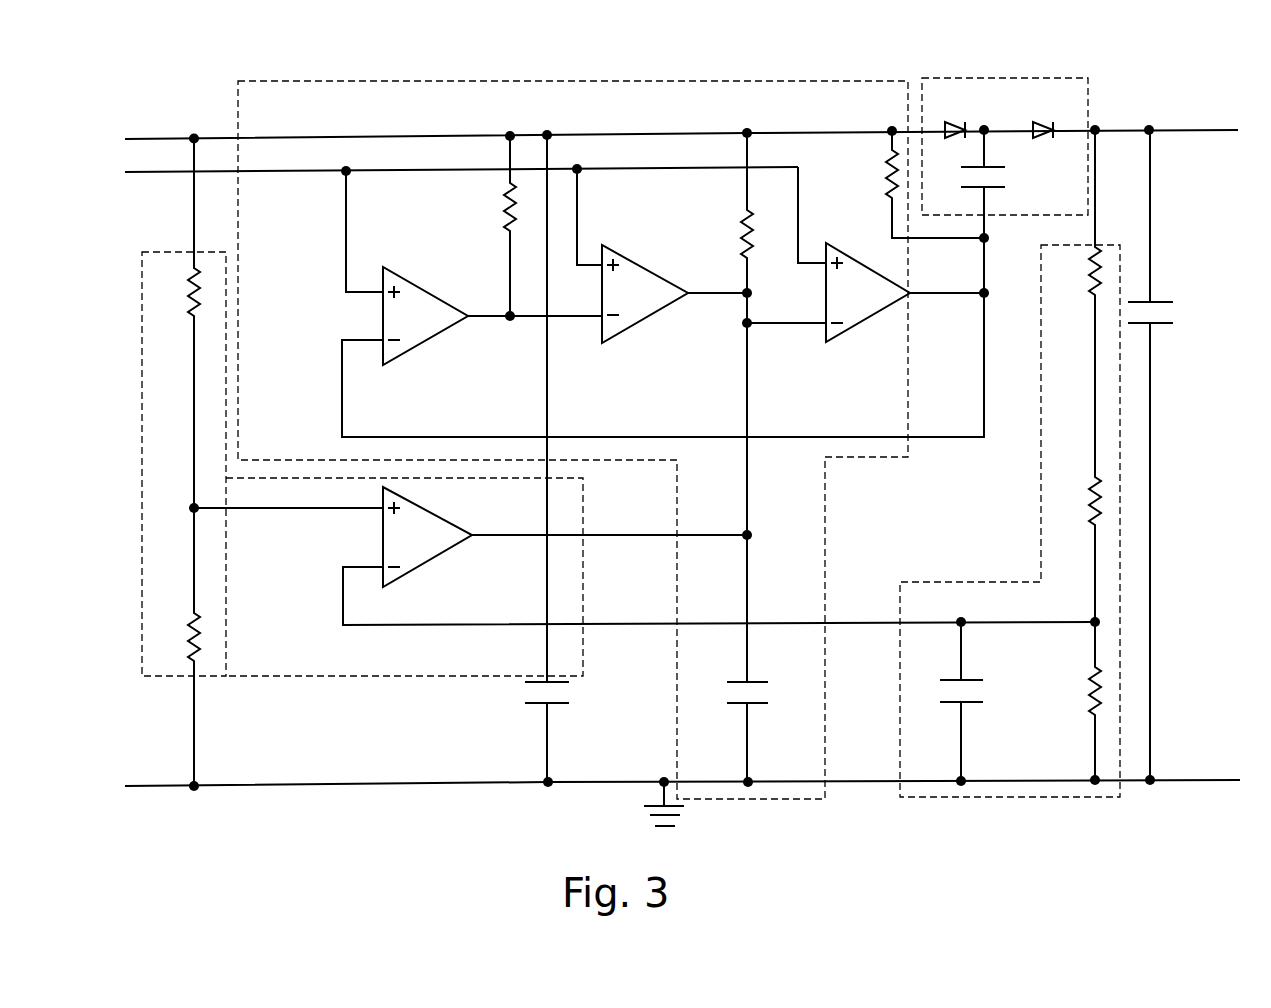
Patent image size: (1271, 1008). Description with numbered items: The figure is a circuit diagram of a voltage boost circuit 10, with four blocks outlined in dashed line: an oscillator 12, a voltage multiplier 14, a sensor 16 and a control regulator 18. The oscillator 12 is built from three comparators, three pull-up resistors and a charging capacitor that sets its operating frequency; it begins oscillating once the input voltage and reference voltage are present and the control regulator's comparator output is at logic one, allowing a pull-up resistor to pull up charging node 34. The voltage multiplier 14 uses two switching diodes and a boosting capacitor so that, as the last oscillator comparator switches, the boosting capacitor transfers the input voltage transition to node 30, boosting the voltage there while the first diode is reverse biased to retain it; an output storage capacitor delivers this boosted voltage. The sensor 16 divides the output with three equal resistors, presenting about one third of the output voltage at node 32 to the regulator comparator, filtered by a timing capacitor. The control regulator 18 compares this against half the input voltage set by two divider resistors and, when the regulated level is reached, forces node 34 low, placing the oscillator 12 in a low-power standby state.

The voltage boost circuit 10 is at (184, 85).
The oscillator 12 is at (714, 82).
The voltage multiplier 14 is at (1090, 84).
The sensor 16 is at (1122, 667).
The control regulator 18 is at (140, 562).
The node 30 is at (986, 129).
The node 32 is at (1098, 620).
The charging node 34 is at (746, 324).